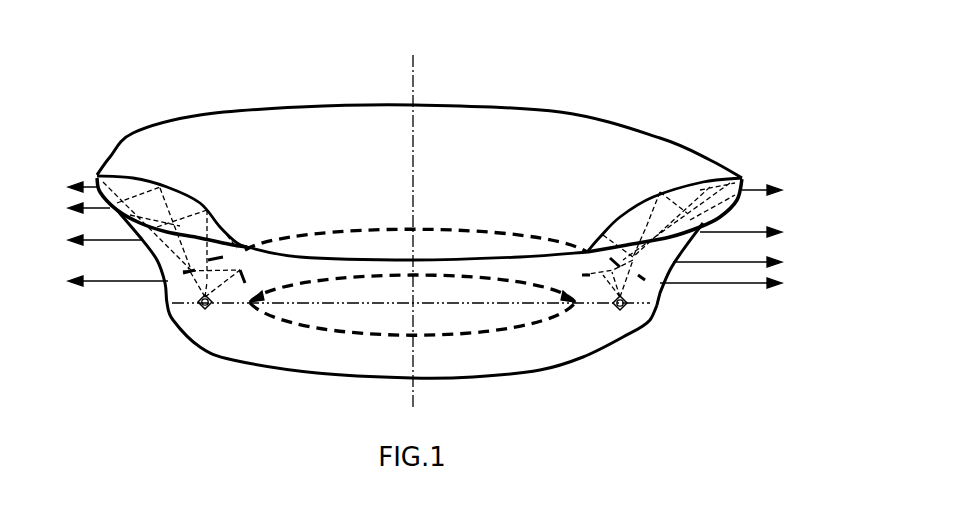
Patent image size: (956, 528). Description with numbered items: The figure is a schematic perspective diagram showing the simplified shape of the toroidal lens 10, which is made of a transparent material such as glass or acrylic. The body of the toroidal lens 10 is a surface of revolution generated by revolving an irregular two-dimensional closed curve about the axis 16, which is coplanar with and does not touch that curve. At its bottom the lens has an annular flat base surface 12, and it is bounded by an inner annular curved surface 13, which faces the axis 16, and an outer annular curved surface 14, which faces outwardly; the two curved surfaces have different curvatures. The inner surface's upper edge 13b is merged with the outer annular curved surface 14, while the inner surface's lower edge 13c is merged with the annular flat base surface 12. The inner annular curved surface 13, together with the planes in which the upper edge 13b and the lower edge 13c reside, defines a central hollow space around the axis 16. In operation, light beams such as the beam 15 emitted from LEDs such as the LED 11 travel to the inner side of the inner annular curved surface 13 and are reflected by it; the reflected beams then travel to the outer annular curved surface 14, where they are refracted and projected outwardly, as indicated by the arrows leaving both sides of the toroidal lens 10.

The toroidal lens 10 is at (200, 107).
The LED 11 is at (627, 310).
The annular flat base surface 12 is at (473, 377).
The inner annular curved surface 13 is at (632, 197).
The inner surface's upper edge 13b is at (743, 178).
The inner surface's lower edge 13c is at (572, 310).
The outer annular curved surface 14 is at (697, 243).
The light beam 15 is at (683, 283).
The axis 16 is at (414, 195).